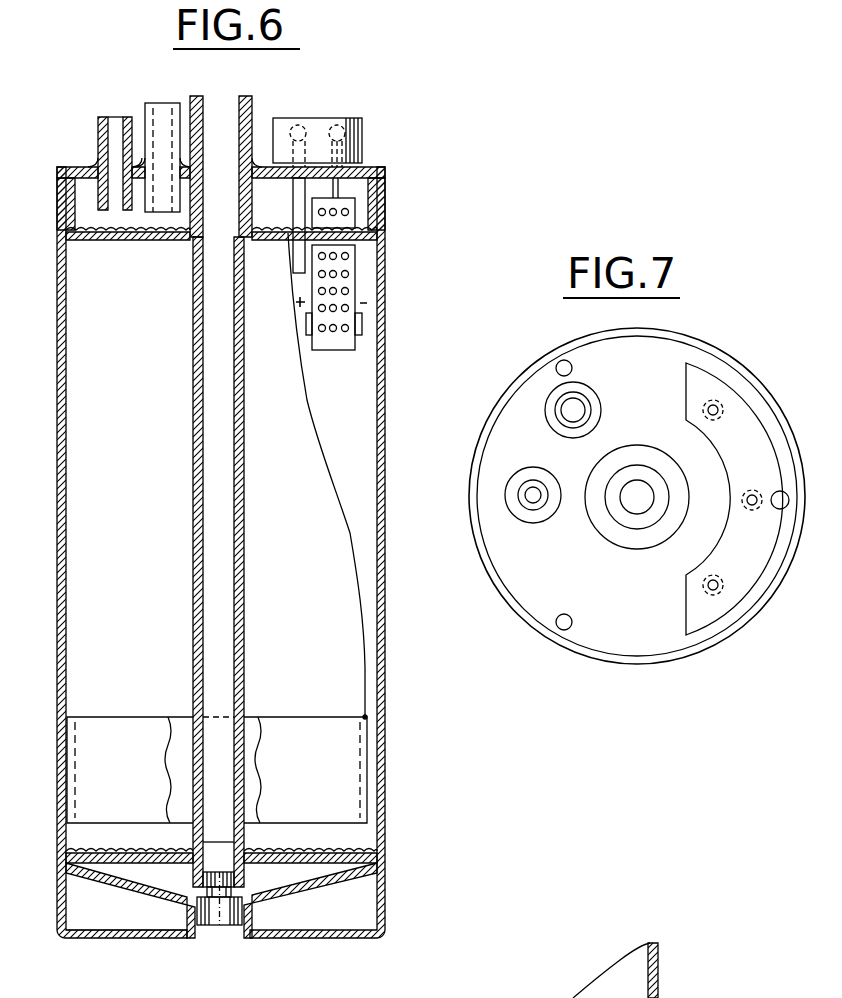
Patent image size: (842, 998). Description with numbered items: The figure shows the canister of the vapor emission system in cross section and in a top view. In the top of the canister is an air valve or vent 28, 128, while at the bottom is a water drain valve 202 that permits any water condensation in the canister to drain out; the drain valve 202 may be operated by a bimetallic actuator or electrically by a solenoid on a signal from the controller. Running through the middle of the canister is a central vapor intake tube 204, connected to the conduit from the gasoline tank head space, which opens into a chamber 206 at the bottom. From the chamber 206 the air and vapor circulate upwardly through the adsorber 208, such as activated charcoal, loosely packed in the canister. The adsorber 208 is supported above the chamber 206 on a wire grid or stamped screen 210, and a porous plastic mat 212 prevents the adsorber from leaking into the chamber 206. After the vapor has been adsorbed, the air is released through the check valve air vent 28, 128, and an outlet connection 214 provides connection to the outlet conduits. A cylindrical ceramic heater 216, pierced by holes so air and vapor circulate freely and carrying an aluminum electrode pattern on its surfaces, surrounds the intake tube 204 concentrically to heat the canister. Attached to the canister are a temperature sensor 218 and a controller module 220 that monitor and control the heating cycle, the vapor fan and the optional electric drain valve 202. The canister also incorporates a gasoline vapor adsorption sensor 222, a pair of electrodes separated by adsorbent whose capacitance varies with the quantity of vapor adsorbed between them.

In FIG. 6, the air valve or vent 28 is at (111, 138).
In FIG. 7, the air valve or vent 28 is at (490, 538).
In FIG. 6, the air valve or vent 128 is at (115, 122).
In FIG. 7, the air valve or vent 128 is at (533, 497).
In FIG. 6, the water drain valve 202 is at (222, 925).
In FIG. 6, the central vapor intake tube 204 is at (227, 541).
In FIG. 7, the central vapor intake tube 204 is at (637, 505).
In FIG. 6, the chamber 206 is at (165, 872).
In FIG. 6, the adsorber 208 is at (345, 680).
In FIG. 6, the wire grid or stamped screen 210 is at (345, 852).
In FIG. 6, the porous plastic mat 212 is at (127, 863).
In FIG. 6, the outlet connection 214 is at (162, 115).
In FIG. 7, the outlet connection 214 is at (580, 410).
In FIG. 6, the cylindrical ceramic heater 216 is at (370, 780).
In FIG. 6, the temperature sensor 218 is at (300, 265).
In FIG. 7, the temperature sensor 218 is at (718, 405).
In FIG. 6, the controller module 220 is at (360, 141).
In FIG. 7, the controller module 220 is at (742, 577).
In FIG. 6, the gasoline vapor adsorption sensor 222 is at (342, 340).